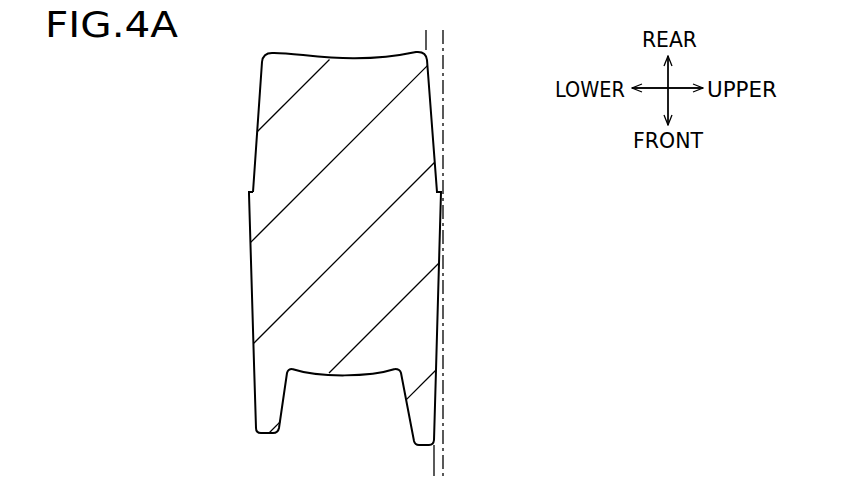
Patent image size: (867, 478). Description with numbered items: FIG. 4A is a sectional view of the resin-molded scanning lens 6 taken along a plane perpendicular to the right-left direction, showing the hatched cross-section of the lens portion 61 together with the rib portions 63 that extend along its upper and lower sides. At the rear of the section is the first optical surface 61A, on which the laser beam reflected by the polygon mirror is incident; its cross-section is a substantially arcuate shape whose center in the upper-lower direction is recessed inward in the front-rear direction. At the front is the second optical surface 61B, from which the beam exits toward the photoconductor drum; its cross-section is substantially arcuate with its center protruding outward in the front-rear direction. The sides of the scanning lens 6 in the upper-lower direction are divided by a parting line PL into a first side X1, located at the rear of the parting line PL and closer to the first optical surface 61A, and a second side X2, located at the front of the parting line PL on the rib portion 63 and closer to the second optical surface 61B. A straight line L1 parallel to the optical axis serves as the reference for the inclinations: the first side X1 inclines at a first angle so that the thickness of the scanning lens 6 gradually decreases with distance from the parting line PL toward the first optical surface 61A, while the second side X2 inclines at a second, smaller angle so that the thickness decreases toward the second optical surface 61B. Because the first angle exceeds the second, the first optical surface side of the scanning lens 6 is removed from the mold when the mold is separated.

The scanning lens 6 is at (498, 102).
The lens portion 61 is at (370, 155).
The first optical surface 61A is at (357, 58).
The second optical surface 61B is at (347, 378).
The rib portion 63 is at (270, 398).
The first side X1 is at (257, 147).
The second side X2 is at (250, 272).
The parting line PL is at (248, 193).
The straight line L1 is at (477, 335).